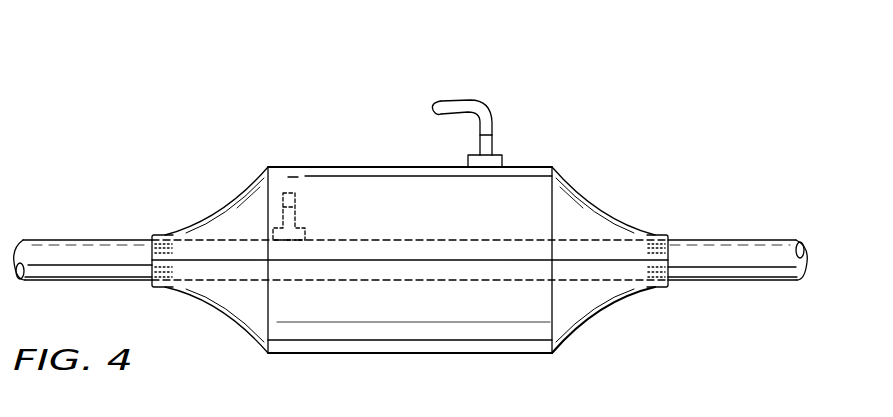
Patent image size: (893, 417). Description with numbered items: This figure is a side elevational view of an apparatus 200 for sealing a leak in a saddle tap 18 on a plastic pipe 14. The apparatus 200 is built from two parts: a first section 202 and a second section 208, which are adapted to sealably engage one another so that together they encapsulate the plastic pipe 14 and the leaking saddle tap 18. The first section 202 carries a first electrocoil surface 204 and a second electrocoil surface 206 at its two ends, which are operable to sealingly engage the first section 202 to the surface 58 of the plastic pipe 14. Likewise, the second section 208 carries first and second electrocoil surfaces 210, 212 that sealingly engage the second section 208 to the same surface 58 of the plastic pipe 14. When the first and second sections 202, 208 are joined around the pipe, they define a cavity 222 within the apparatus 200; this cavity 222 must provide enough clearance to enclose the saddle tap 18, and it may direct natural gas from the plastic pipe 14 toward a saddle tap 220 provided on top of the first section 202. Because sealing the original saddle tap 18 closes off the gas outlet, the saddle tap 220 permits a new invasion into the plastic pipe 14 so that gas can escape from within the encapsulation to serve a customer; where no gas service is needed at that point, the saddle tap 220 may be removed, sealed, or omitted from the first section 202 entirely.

The plastic pipe 14 is at (740, 247).
The surface of the plastic pipe 58 is at (80, 247).
The saddle tap 18 is at (297, 219).
The apparatus 200 is at (203, 167).
The first section 202 is at (321, 175).
The first electrocoil surface 204 is at (165, 232).
The second electrocoil surface 206 is at (656, 233).
The second section 208 is at (398, 346).
The first electrocoil surface of second section 210 is at (166, 281).
The second electrocoil surface of second section 212 is at (652, 283).
The saddle tap 220 is at (469, 100).
The cavity 222 is at (402, 184).